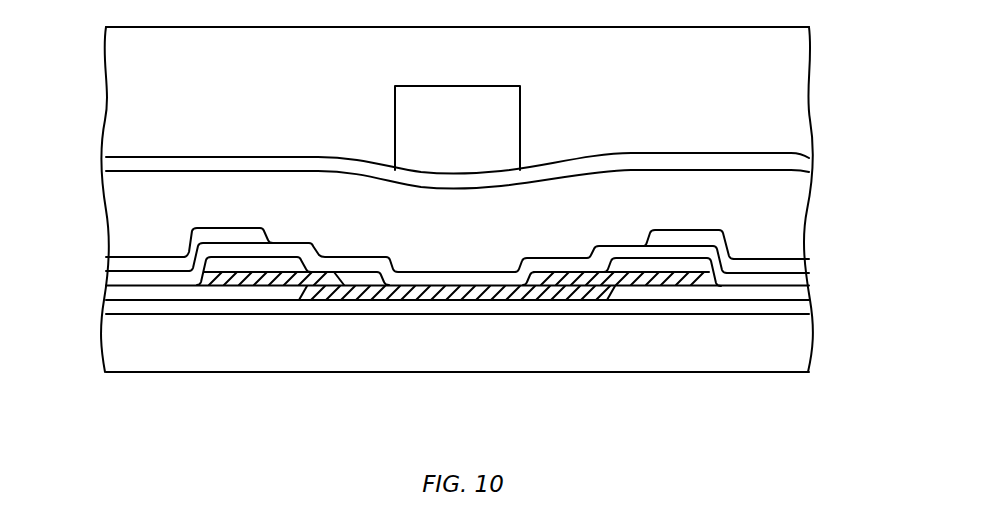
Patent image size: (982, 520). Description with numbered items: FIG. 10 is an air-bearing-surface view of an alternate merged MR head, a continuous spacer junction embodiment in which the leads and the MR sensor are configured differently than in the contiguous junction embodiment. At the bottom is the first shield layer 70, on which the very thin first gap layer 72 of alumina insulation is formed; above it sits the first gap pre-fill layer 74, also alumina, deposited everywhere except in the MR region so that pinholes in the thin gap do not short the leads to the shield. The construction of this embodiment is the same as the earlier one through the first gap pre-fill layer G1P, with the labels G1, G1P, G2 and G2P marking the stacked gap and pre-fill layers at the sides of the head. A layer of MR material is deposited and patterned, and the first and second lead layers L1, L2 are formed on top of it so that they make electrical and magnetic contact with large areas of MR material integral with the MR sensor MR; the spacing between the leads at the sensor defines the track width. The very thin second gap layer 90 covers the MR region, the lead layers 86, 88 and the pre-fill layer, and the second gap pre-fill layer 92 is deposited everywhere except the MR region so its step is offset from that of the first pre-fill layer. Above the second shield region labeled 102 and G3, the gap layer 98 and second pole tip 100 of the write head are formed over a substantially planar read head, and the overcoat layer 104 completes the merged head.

The overcoat layer 104 is at (783, 82).
The second pole tip 100 is at (497, 115).
The gap layer 98 is at (108, 163).
The third gate insulator layer G3 is at (806, 163).
The second semiconductor region S2 102 is at (800, 207).
The second gap pre-fill layer 92 is at (218, 235).
The second gap layer 90 is at (288, 250).
The first lead layer 86 is at (309, 266).
The second lead layer 88 is at (560, 282).
The second gate polysilicon layer G2P is at (103, 258).
The second gate insulator G2 is at (103, 275).
The first gap pre-fill layer G1P is at (104, 293).
The first gate insulator G1 is at (103, 314).
The first lead layer L1 is at (347, 280).
The MR sensor MR is at (478, 293).
The second lead layer L2 is at (582, 286).
The first gap pre-fill layer 74 is at (215, 292).
The first gap layer 72 is at (693, 312).
The first shield layer 70 is at (795, 359).